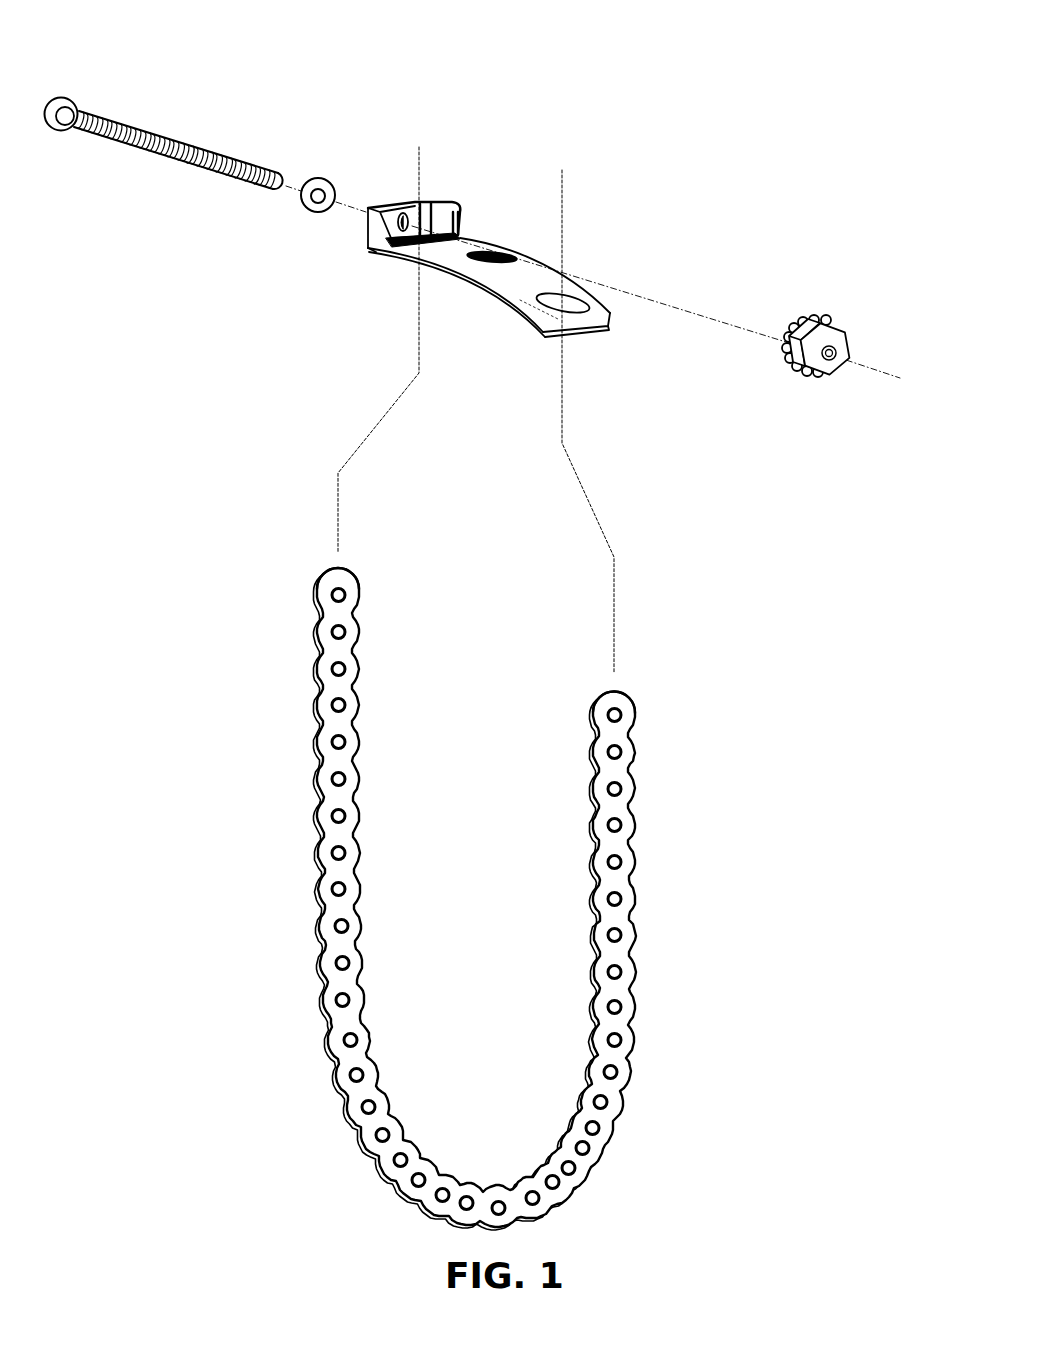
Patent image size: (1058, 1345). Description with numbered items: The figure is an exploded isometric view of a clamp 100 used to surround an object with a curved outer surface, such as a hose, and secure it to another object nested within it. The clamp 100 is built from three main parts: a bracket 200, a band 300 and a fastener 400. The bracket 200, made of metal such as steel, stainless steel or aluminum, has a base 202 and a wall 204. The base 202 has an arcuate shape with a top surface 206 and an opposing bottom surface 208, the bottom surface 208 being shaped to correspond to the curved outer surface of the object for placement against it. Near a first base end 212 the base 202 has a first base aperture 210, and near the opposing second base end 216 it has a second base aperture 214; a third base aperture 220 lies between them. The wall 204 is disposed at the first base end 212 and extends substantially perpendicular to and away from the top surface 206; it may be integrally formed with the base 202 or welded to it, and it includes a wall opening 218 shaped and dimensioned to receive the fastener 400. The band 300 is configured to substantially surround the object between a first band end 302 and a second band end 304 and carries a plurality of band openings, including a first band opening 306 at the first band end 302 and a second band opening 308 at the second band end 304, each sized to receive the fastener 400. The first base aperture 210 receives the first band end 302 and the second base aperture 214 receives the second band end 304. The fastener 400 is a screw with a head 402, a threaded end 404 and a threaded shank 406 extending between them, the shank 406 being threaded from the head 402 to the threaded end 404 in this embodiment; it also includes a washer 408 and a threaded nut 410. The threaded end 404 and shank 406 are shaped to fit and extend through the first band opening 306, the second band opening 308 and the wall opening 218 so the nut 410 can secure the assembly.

The clamp 100 is at (156, 40).
The bracket 200 is at (389, 277).
The base 202 is at (478, 282).
The wall 204 is at (425, 208).
The top surface 206 is at (550, 285).
The bottom surface 208 is at (521, 320).
The first base aperture 210 is at (437, 222).
The first base end 212 is at (380, 250).
The second base aperture 214 is at (572, 297).
The second base end 216 is at (582, 320).
The wall opening 218 is at (401, 212).
The third base aperture 220 is at (496, 250).
The band 300 is at (650, 675).
The first band end 302 is at (338, 572).
The second band end 304 is at (611, 694).
The first band opening 306 is at (334, 660).
The second band opening 308 is at (612, 790).
The fastener 400 is at (787, 313).
The head 402 is at (50, 130).
The threaded end 404 is at (273, 167).
The threaded shank 406 is at (179, 143).
The washer 408 is at (299, 210).
The threaded nut 410 is at (845, 340).